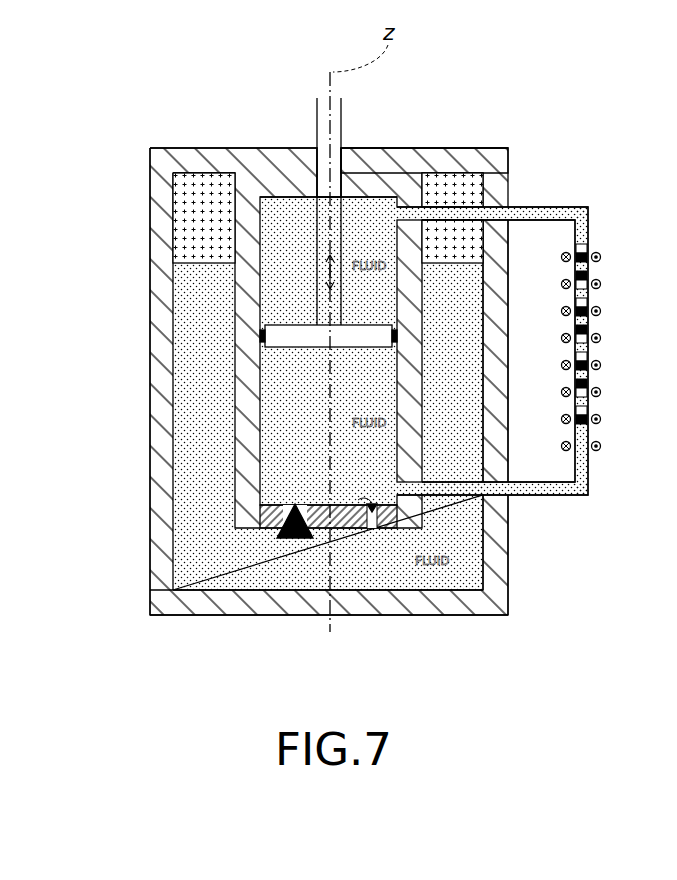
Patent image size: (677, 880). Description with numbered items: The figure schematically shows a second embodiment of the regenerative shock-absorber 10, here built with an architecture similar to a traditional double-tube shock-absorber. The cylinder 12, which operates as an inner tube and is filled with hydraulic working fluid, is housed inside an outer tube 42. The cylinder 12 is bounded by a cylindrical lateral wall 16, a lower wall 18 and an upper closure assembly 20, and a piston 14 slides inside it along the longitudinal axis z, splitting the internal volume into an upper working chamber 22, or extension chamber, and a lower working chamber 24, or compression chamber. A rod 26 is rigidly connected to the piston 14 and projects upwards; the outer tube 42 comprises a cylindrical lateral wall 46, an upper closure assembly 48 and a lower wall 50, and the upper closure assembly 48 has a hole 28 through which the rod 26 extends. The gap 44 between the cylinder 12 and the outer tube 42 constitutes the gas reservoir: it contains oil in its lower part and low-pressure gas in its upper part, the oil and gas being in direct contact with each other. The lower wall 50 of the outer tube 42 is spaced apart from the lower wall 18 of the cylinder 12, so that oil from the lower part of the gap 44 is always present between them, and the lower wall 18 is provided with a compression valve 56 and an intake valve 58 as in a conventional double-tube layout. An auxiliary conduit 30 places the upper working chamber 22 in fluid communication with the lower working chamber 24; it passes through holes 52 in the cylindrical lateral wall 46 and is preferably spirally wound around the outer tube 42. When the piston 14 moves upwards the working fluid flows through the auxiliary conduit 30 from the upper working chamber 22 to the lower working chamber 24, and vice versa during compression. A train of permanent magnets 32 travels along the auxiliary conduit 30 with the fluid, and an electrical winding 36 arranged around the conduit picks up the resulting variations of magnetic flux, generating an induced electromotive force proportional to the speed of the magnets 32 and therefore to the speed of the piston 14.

The regenerative shock-absorber 10 is at (168, 144).
The cylinder 12 is at (433, 249).
The piston 14 is at (298, 325).
The cylindrical lateral wall 16 is at (240, 448).
The lower wall 18 is at (385, 530).
The upper closure assembly 20 is at (398, 150).
The upper working chamber 22 is at (283, 247).
The lower working chamber 24 is at (287, 383).
The rod 26 is at (322, 165).
The hole 28 is at (317, 140).
The auxiliary conduit 30 is at (575, 208).
The permanent magnets 32 is at (590, 308).
The electrical winding 36 is at (601, 255).
The outer tube 42 is at (150, 574).
The gap 44 is at (215, 562).
The cylindrical lateral wall 46 is at (510, 589).
The upper closure assembly 48 is at (210, 148).
The lower wall 50 is at (455, 616).
The holes 52 is at (523, 207).
The compression valve 56 is at (293, 540).
The intake valve 58 is at (350, 530).